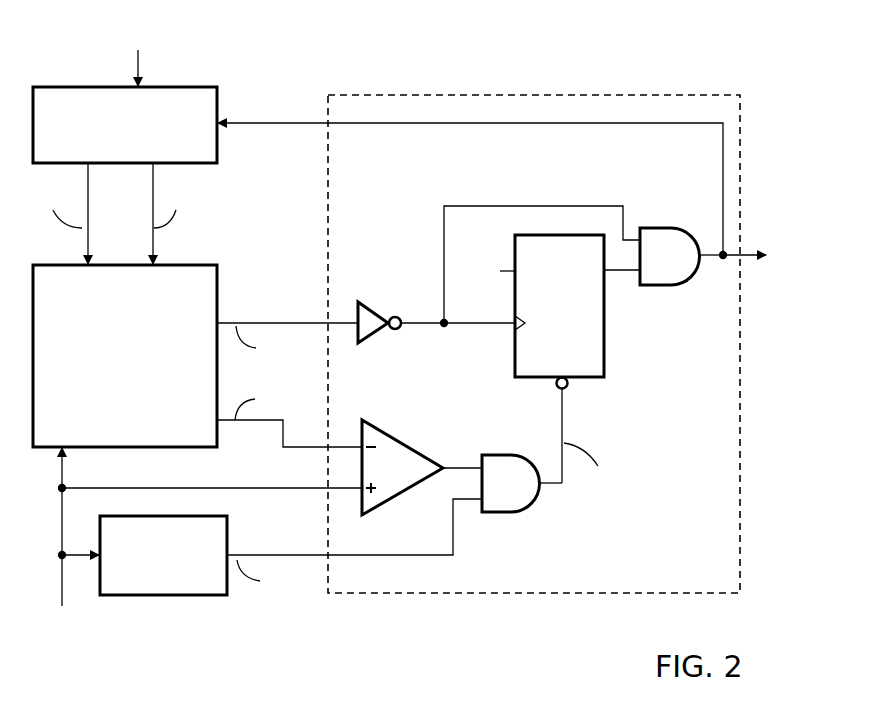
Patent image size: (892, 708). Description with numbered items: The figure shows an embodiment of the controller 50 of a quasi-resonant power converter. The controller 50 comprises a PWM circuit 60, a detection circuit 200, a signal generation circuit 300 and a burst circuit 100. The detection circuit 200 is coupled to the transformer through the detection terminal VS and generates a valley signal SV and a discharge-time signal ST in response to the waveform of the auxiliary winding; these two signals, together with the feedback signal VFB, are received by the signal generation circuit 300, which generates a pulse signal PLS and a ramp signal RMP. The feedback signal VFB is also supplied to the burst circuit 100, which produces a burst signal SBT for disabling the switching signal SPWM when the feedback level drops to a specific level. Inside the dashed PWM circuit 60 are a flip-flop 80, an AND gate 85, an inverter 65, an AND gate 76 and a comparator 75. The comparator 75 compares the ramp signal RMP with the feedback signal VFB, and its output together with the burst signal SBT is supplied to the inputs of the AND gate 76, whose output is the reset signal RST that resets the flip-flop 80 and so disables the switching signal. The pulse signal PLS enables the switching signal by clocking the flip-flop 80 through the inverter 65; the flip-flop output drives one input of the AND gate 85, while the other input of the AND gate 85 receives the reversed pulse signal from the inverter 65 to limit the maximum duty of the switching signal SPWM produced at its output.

The controller 50 is at (804, 66).
The PWM circuit 60 is at (742, 515).
The inverter 65 is at (372, 303).
The comparator 75 is at (393, 433).
The AND gate 76 is at (500, 513).
The flip-flop 80 is at (606, 352).
The AND gate 85 is at (660, 287).
The burst circuit 100 is at (146, 599).
The detection circuit 200 is at (187, 86).
The signal generation circuit 300 is at (217, 283).